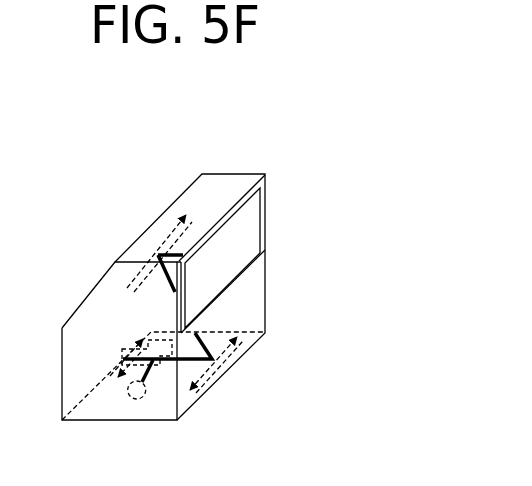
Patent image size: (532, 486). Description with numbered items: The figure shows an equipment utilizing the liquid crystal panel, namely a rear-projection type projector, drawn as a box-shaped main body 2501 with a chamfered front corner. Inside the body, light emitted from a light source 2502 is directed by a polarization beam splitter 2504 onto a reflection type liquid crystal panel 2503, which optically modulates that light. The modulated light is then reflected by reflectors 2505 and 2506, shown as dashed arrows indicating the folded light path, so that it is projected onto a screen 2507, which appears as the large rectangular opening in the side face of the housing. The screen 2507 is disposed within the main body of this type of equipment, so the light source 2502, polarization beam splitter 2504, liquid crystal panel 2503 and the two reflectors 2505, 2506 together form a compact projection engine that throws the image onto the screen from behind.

The housing 2501 is at (204, 182).
The light source 2502 is at (134, 399).
The reflection type liquid crystal panel 2503 is at (132, 347).
The polarization beam splitter 2504 is at (157, 366).
The reflector 2505 is at (211, 375).
The reflector 2506 is at (158, 242).
The screen 2507 is at (227, 236).